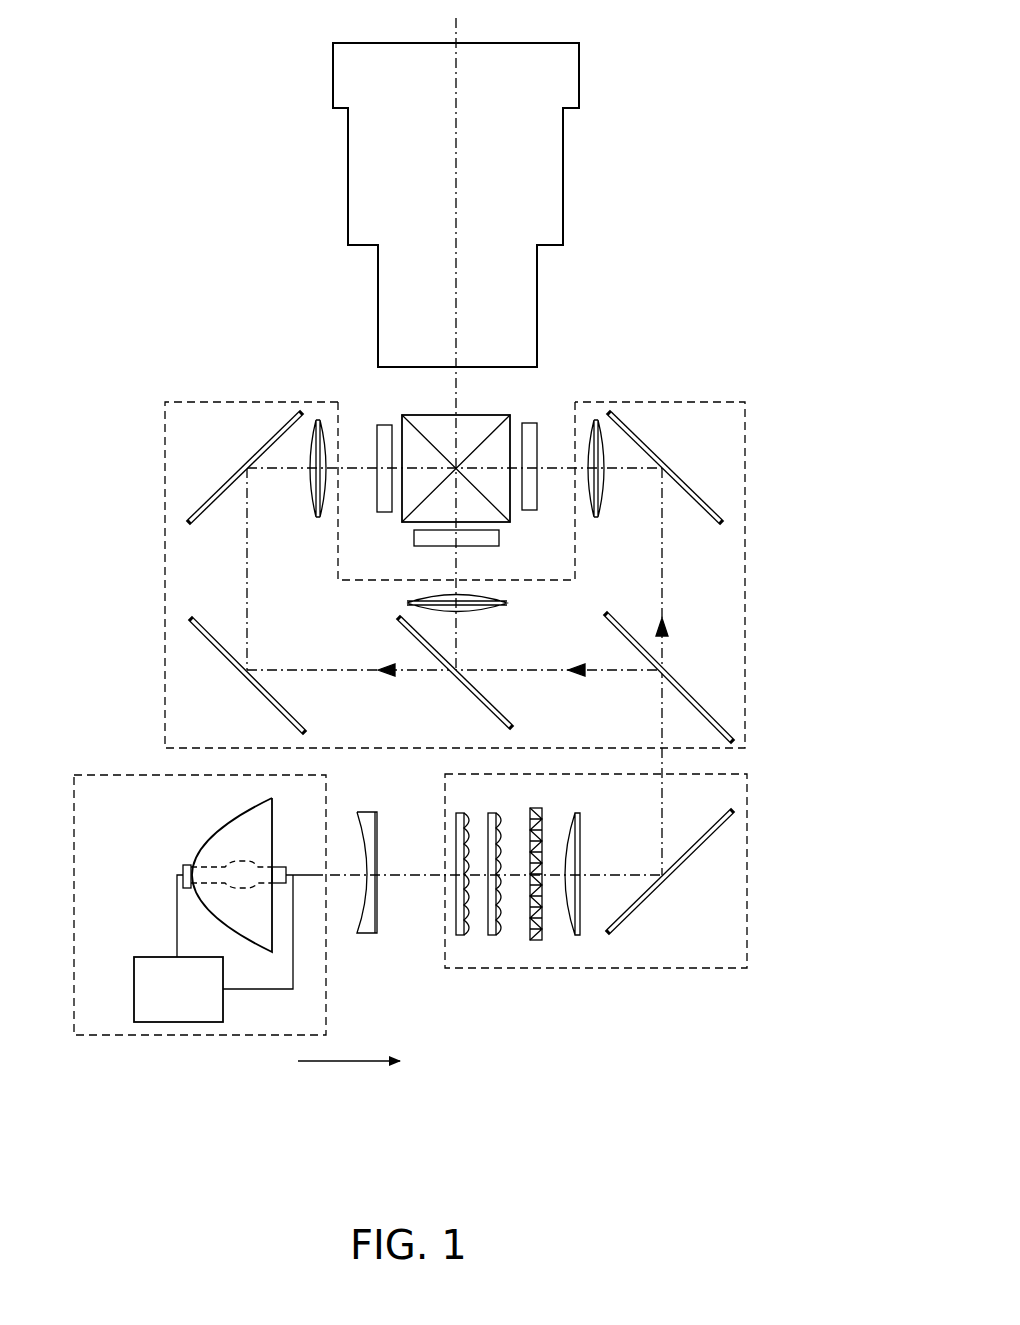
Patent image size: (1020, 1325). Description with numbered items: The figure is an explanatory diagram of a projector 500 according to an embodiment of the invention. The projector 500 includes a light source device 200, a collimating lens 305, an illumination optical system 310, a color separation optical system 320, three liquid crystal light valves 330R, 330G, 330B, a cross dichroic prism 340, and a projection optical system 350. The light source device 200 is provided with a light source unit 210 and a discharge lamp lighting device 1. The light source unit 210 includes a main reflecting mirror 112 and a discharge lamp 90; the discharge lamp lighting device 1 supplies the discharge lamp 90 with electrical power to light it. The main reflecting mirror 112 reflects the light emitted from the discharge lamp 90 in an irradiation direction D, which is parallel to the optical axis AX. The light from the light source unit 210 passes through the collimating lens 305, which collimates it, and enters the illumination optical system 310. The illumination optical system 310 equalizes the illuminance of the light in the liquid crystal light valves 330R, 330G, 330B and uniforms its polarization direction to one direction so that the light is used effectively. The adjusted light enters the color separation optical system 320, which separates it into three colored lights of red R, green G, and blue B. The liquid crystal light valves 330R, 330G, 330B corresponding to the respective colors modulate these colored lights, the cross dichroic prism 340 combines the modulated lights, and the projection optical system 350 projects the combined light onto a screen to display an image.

The projector 500 is at (661, 29).
The projection optical system 350 is at (565, 205).
The cross dichroic prism 340 is at (445, 415).
The liquid crystal light valve 330R is at (530, 423).
The liquid crystal light valve 330G is at (474, 547).
The liquid crystal light valve 330B is at (383, 512).
The color separation optical system 320 is at (746, 714).
The illumination optical system 310 is at (748, 934).
The collimating lens 305 is at (367, 935).
The light source device 200 is at (165, 1037).
The light source unit 210 is at (199, 871).
The main reflecting mirror 112 is at (206, 836).
The discharge lamp 90 is at (279, 866).
The discharge lamp lighting device 1 is at (134, 993).
The optical axis AX is at (418, 877).
The irradiation direction D is at (364, 1061).
The blue colored light B is at (247, 591).
The green colored light G is at (458, 637).
The red colored light R is at (664, 590).